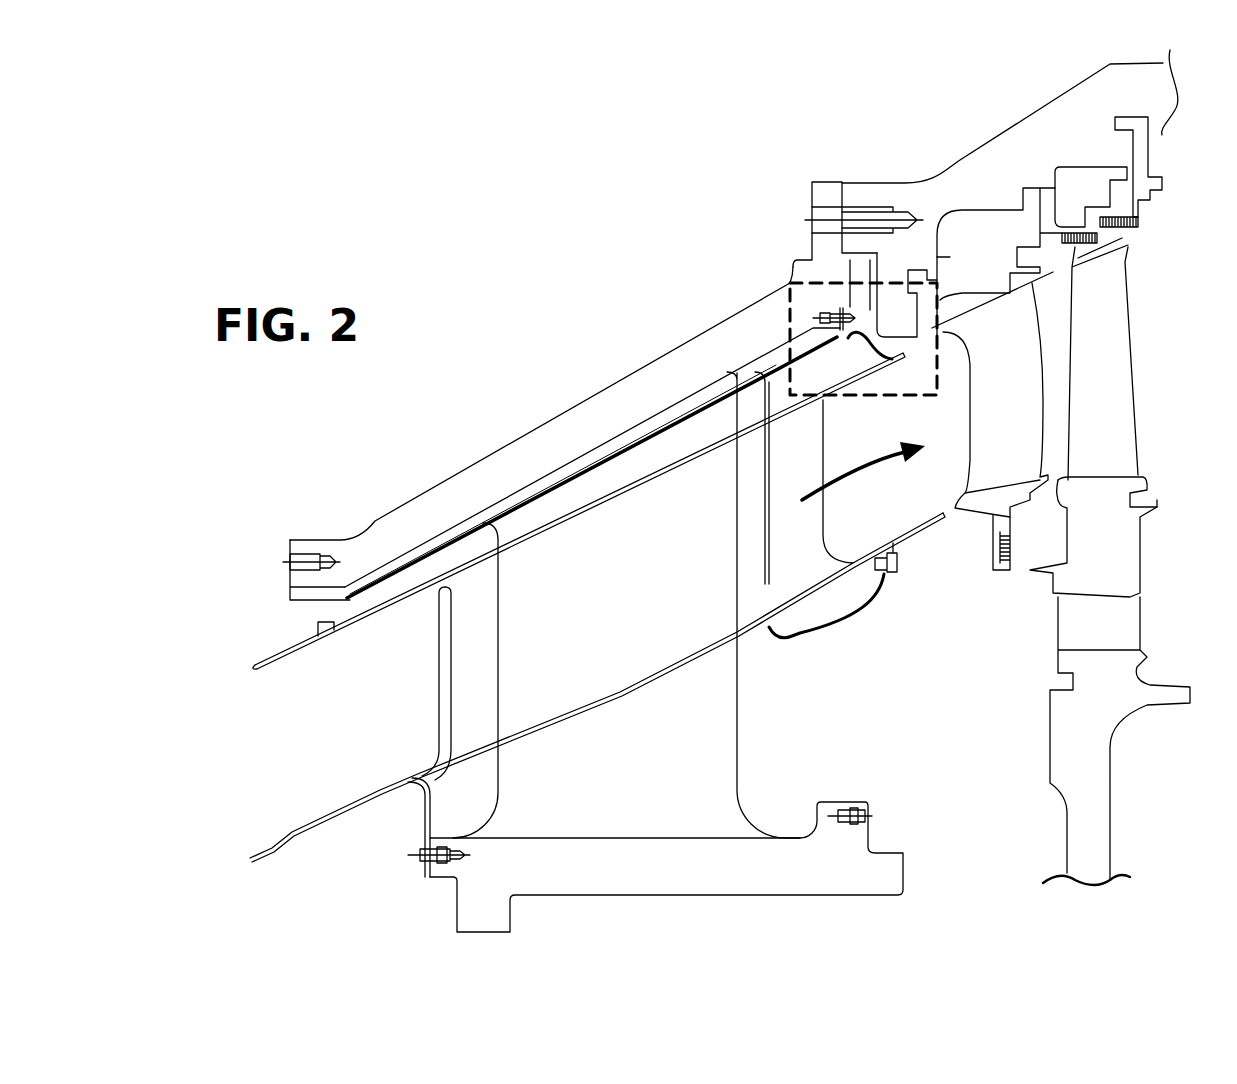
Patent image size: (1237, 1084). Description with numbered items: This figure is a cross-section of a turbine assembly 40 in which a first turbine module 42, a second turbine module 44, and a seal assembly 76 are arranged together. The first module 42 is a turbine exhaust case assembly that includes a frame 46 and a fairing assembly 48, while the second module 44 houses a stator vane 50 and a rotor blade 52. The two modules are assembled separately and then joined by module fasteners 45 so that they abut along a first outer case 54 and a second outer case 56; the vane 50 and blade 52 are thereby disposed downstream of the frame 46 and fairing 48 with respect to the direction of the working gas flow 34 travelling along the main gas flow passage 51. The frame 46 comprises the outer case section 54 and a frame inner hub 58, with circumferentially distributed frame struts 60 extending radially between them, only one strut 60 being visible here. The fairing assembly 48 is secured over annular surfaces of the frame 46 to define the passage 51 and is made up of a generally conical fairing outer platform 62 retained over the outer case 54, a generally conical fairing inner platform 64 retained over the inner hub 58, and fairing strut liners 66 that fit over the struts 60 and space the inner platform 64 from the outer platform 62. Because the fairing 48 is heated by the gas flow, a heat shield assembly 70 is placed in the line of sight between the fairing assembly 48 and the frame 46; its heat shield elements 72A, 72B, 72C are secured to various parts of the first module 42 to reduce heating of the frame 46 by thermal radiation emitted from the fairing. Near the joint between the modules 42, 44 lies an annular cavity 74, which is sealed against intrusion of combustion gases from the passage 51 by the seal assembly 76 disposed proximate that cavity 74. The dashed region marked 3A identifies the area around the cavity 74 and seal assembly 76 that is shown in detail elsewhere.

The detail region of FIG. 3A is at (790, 313).
The working gas flow 34 is at (870, 476).
The turbine assembly 40 is at (537, 228).
The first turbine module 42 is at (522, 336).
The second turbine module 44 is at (928, 196).
The module fasteners 45 is at (815, 213).
The frame 46 is at (466, 434).
The fairing assembly 48 is at (378, 812).
The stator vane 50 is at (1018, 410).
The main gas flow passage 51 is at (899, 509).
The rotor blade 52 is at (1113, 377).
The first outer case 54 is at (370, 530).
The second outer case 56 is at (1006, 188).
The frame inner hub 58 is at (470, 902).
The frame strut 60 is at (623, 782).
The fairing outer platform 62 is at (315, 655).
The fairing inner platform 64 is at (332, 810).
The fairing strut liners 66 is at (447, 688).
The heat shield assembly 70 is at (872, 632).
The heat shield element 72A is at (790, 343).
The heat shield element 72B is at (747, 537).
The heat shield element 72C is at (812, 648).
The annular cavity 74 is at (872, 310).
The seal assembly 76 is at (830, 306).